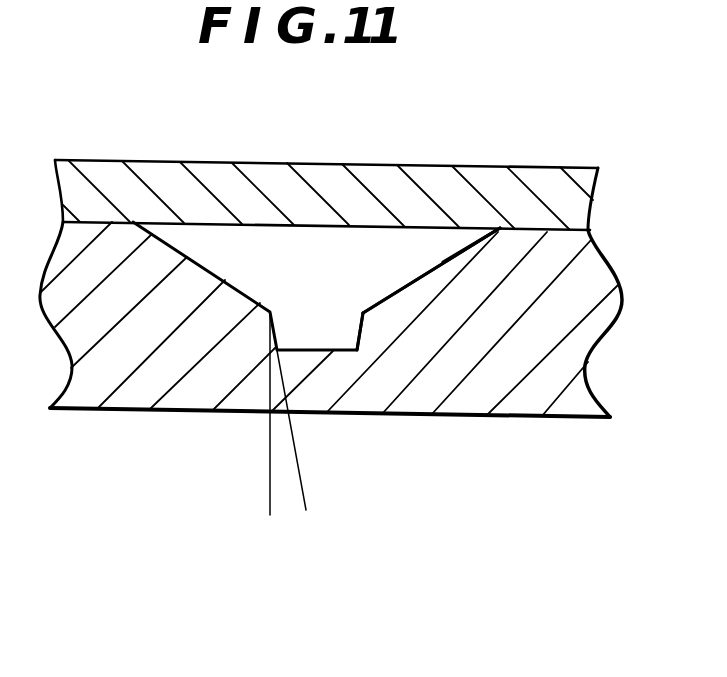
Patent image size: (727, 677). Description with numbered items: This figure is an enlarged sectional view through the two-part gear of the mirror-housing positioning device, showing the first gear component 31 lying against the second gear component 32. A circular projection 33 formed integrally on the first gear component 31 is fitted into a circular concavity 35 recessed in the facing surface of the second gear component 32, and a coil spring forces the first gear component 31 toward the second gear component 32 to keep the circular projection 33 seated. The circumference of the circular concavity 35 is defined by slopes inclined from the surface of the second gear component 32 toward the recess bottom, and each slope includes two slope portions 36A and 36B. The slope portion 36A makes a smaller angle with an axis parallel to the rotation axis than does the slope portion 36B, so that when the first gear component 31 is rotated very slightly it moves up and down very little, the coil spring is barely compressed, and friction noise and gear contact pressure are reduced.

The first gear component 31 is at (162, 160).
The second gear component 32 is at (122, 398).
The circular projection 33 is at (243, 272).
The circular concavity 35 is at (395, 290).
The slope portion 36A is at (357, 328).
The slope portion 36B is at (443, 262).